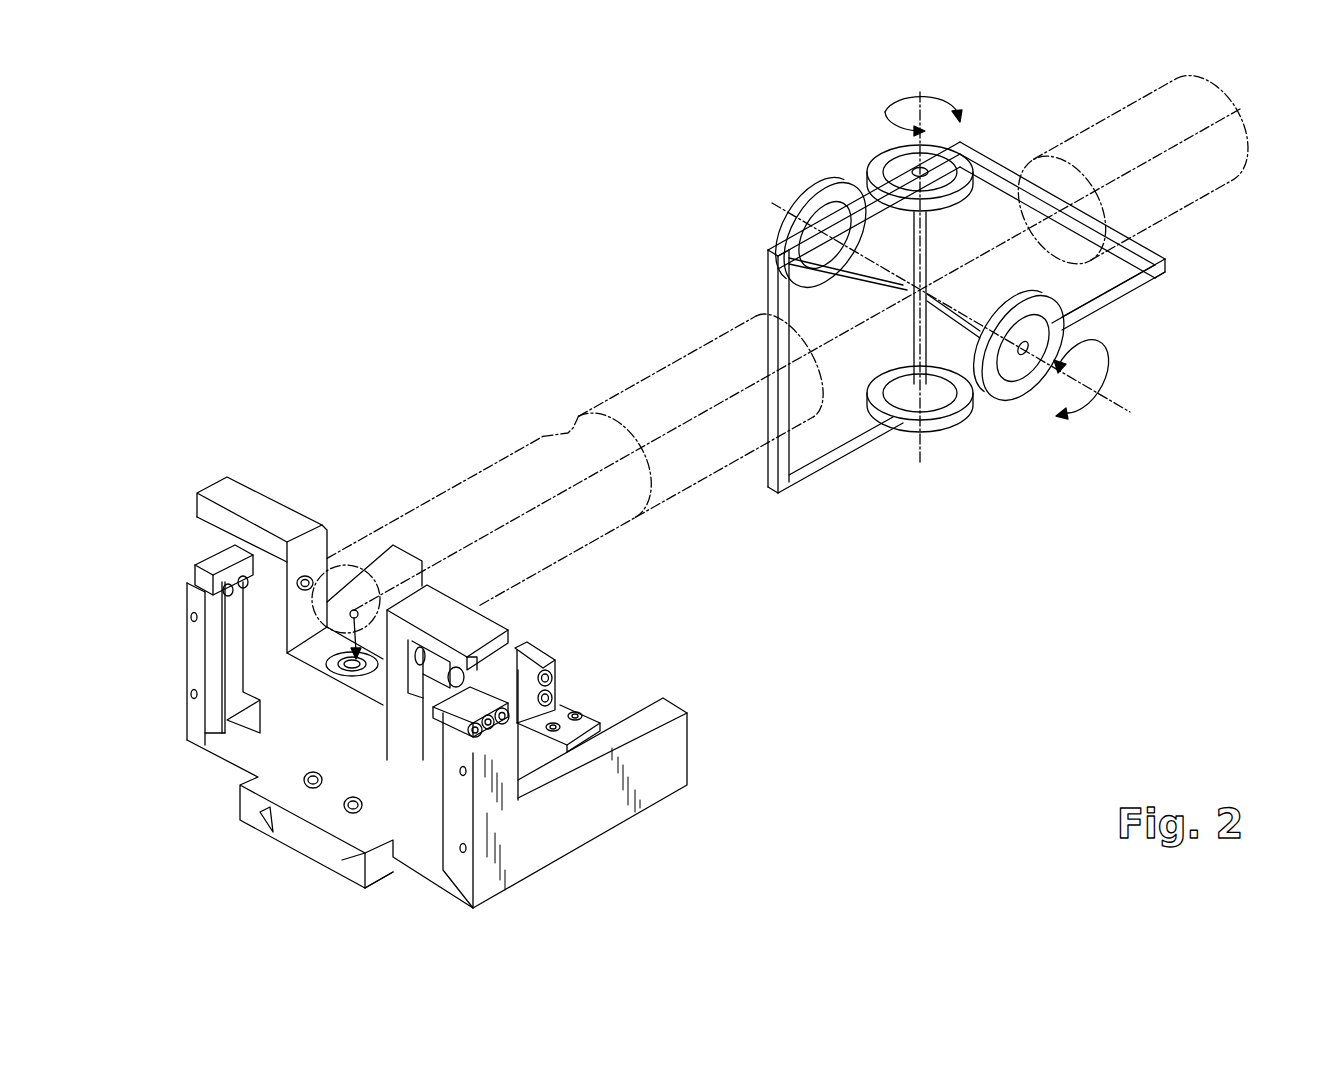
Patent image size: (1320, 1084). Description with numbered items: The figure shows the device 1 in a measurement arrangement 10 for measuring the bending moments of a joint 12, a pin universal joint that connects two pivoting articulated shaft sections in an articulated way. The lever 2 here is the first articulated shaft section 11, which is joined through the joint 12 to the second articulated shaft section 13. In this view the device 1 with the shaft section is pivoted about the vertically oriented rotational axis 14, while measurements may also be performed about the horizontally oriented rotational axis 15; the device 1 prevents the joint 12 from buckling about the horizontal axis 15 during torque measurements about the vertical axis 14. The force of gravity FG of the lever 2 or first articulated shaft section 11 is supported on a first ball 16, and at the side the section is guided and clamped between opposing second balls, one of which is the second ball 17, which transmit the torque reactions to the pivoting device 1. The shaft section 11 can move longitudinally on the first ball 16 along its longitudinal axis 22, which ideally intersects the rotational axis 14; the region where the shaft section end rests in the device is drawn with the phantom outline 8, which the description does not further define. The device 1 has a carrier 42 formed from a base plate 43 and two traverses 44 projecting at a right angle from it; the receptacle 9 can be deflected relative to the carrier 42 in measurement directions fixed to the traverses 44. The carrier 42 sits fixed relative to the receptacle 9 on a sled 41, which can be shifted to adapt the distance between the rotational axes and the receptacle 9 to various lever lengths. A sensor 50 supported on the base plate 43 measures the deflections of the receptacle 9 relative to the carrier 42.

The device 1 is at (352, 569).
The lever 2 is at (783, 359).
The receiving region 8 is at (345, 566).
The receptacle 9 is at (392, 758).
The measurement arrangement 10 is at (441, 442).
The first articulated shaft section 11 is at (594, 526).
The joint 12 is at (906, 290).
The second articulated shaft section 13 is at (1177, 193).
The rotational axis 14 is at (886, 109).
The rotational axis 15 is at (1117, 407).
The first ball 16 is at (357, 675).
The second ball 17 is at (303, 575).
The longitudinal axis 22 is at (467, 547).
The sled 41 is at (252, 815).
The carrier 42 is at (396, 732).
The base plate 43 is at (430, 873).
The traverses 44 is at (192, 653).
The sensor 50 is at (530, 652).
The force of gravity FG is at (333, 657).